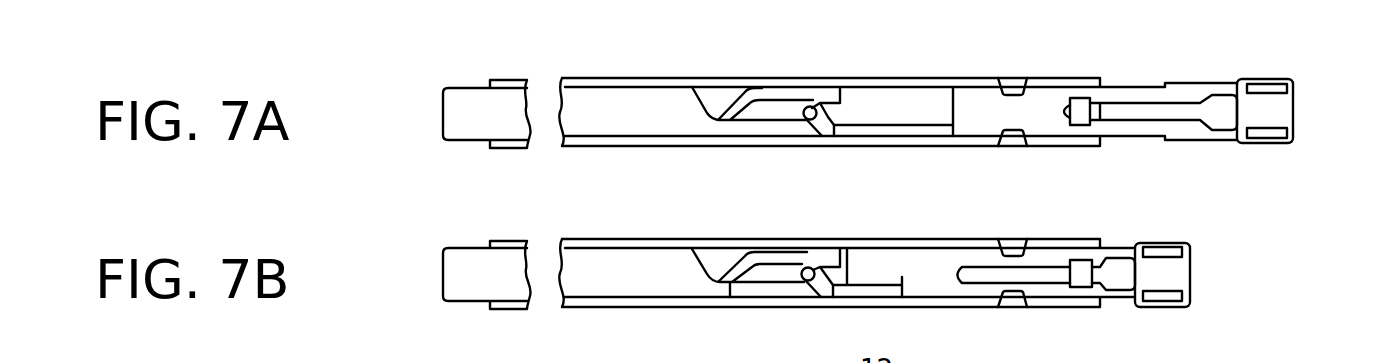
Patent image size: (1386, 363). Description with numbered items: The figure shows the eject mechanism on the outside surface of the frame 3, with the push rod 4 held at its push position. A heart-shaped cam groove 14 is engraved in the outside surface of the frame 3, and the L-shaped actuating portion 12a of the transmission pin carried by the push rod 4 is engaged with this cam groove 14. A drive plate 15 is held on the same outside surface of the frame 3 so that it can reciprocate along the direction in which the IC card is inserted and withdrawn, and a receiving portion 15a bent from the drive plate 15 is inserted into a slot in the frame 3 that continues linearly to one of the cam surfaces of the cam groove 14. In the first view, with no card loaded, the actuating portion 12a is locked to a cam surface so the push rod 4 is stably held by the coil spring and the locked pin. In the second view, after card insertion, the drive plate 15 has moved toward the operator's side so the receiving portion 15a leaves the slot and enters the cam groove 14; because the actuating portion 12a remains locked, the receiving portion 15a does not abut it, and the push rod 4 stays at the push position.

In FIG. 7A, the frame 3 is at (1067, 83).
In FIG. 7B, the frame 3 is at (846, 273).
In FIG. 7A, the push rod 4 is at (452, 118).
In FIG. 7B, the push rod 4 is at (452, 277).
In FIG. 7A, the heart-shaped cam groove 14 is at (768, 92).
In FIG. 7B, the heart-shaped cam groove 14 is at (749, 273).
In FIG. 7A, the actuating portion 12a is at (812, 106).
In FIG. 7B, the actuating portion 12a is at (808, 267).
In FIG. 7A, the drive plate 15 is at (1290, 108).
In FIG. 7B, the drive plate 15 is at (1185, 273).
In FIG. 7A, the receiving portion 15a is at (928, 130).
In FIG. 7B, the receiving portion 15a is at (793, 292).